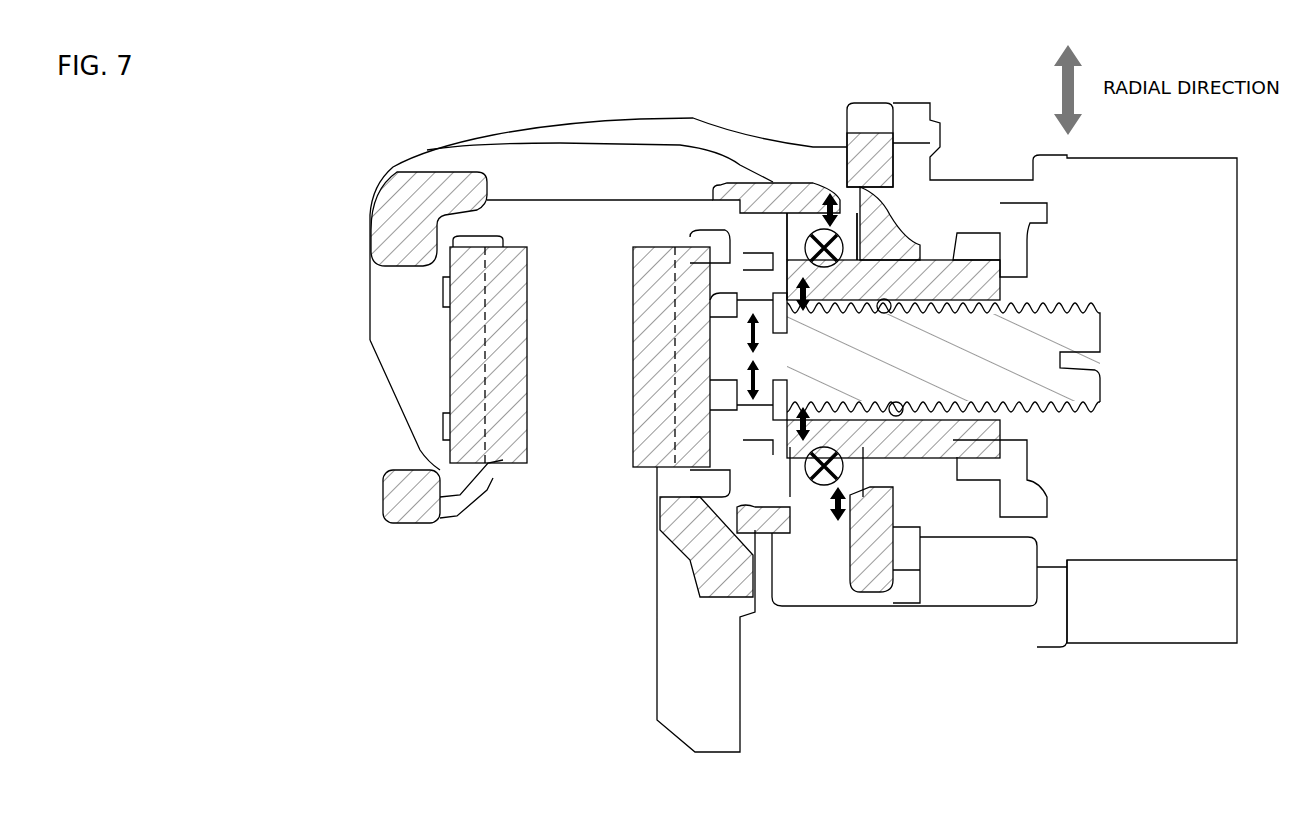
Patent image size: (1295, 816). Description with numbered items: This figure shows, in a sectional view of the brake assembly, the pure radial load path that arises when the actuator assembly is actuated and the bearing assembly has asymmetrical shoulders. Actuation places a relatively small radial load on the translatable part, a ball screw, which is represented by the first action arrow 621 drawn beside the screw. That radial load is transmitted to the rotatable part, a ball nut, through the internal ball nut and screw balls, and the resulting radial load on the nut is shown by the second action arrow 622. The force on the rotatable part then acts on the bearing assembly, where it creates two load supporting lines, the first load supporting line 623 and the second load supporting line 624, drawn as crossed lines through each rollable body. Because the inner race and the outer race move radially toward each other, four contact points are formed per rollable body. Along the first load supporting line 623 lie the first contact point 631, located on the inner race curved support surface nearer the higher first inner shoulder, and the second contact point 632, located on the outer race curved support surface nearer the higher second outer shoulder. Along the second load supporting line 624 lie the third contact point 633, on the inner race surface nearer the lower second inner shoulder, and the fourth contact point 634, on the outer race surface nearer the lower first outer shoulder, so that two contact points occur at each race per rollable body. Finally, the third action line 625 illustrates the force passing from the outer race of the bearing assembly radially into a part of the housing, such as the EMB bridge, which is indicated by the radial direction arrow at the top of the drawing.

The first action arrow 621 is at (770, 383).
The second action arrow 622 is at (805, 293).
The first load supporting line 623 is at (830, 262).
The second load supporting line 624 is at (850, 265).
The third action line 625 is at (835, 218).
The first contact point 631 is at (835, 245).
The second contact point 632 is at (858, 205).
The third contact point 633 is at (860, 262).
The fourth contact point 634 is at (813, 237).